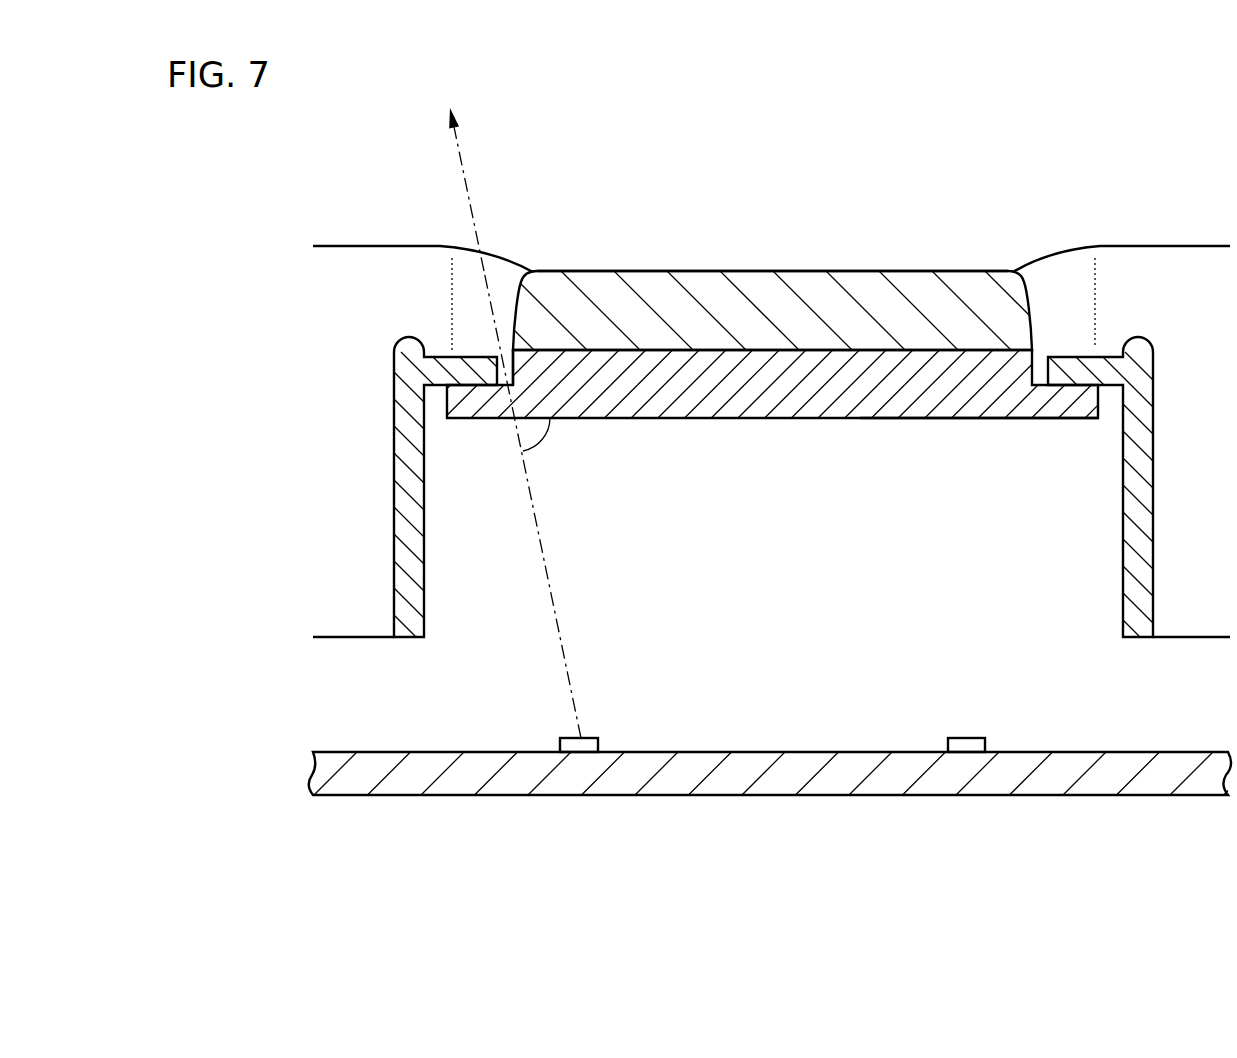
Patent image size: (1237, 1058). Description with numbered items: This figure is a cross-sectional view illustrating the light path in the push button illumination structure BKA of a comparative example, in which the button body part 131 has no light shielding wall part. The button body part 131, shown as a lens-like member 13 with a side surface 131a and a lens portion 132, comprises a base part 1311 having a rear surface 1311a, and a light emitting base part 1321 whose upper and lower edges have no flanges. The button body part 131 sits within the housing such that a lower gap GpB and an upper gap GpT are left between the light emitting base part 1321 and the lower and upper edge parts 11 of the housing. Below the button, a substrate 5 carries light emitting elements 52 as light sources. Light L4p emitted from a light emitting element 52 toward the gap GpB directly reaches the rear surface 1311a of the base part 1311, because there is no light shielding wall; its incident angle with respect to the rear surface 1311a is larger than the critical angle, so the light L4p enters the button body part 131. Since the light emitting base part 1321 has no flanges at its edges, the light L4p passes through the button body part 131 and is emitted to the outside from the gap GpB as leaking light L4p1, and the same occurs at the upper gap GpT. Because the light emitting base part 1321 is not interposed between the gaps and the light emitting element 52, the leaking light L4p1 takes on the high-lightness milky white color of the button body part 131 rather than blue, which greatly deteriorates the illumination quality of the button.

The substrate 5 is at (757, 797).
The light emitting element 52 is at (585, 737).
The edge part 11 is at (443, 352).
The light guide member 13 is at (751, 306).
The button body part 131 is at (751, 347).
The base part 1311 is at (813, 420).
The rear surface 1311a is at (908, 420).
The side surface of base portion 131a is at (510, 384).
The lens portion 132 is at (772, 266).
The light emitting base part 1321 is at (650, 270).
The push button illumination structure BKA is at (855, 144).
The gap GpB is at (497, 306).
The gap GpT is at (1046, 342).
The light L4p is at (546, 549).
The light L4p1 is at (458, 147).